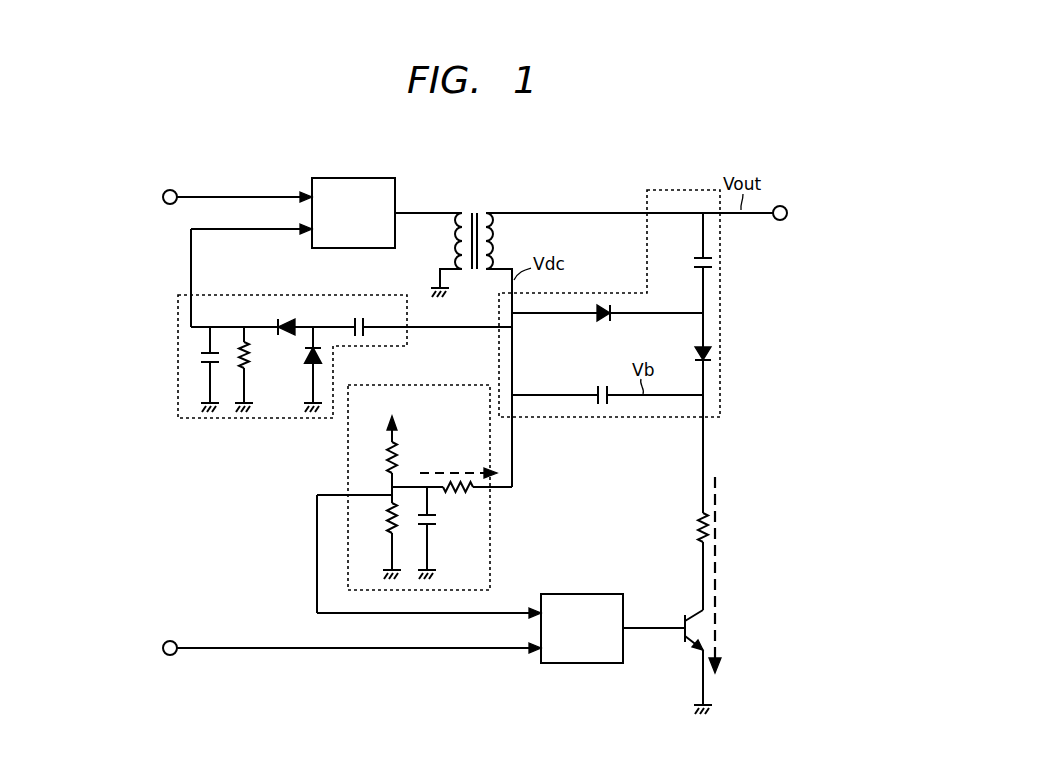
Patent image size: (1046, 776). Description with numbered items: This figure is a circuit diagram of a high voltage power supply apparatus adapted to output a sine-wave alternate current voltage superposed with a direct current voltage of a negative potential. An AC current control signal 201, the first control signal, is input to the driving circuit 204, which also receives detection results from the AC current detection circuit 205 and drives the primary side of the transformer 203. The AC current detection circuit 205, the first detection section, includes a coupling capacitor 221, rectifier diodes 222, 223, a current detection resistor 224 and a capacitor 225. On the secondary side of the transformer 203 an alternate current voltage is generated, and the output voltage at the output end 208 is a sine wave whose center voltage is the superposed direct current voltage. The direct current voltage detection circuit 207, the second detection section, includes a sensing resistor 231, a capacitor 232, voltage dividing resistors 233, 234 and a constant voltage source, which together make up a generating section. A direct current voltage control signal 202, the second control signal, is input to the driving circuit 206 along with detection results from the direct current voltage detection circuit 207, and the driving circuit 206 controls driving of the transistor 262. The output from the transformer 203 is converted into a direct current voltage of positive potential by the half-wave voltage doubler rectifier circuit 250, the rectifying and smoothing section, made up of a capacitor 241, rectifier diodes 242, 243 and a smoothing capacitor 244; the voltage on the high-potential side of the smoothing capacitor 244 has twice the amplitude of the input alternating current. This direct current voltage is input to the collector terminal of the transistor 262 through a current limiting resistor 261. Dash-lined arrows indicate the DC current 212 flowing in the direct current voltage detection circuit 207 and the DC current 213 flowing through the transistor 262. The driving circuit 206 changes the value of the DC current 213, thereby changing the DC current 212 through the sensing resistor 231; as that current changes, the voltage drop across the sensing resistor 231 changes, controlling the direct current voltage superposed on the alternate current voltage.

The AC current control signal 201 is at (176, 189).
The direct current voltage control signal 202 is at (176, 641).
The transformer 203 is at (475, 210).
The driving circuit 204 is at (352, 178).
The AC current detection circuit 205 is at (231, 295).
The driving circuit 206 is at (583, 594).
The direct current voltage detection circuit 207 is at (444, 385).
The output end 208 is at (782, 205).
The DC current 212 is at (455, 473).
The DC current 213 is at (718, 484).
The coupling capacitor 221 is at (358, 318).
The rectifier diode 222 is at (309, 356).
The rectifier diode 223 is at (283, 318).
The current detection resistor 224 is at (236, 372).
The capacitor 225 is at (202, 366).
The sensing resistor 231 is at (468, 491).
The capacitor 232 is at (432, 526).
The voltage dividing resistor 233 is at (386, 455).
The voltage dividing resistor 234 is at (386, 515).
The capacitor 241 is at (696, 258).
The rectifier diode 242 is at (602, 305).
The rectifier diode 243 is at (696, 352).
The smoothing capacitor 244 is at (602, 386).
The half-wave voltage doubler rectifier circuit 250 is at (722, 400).
The current limiting resistor 261 is at (698, 530).
The transistor 262 is at (692, 614).